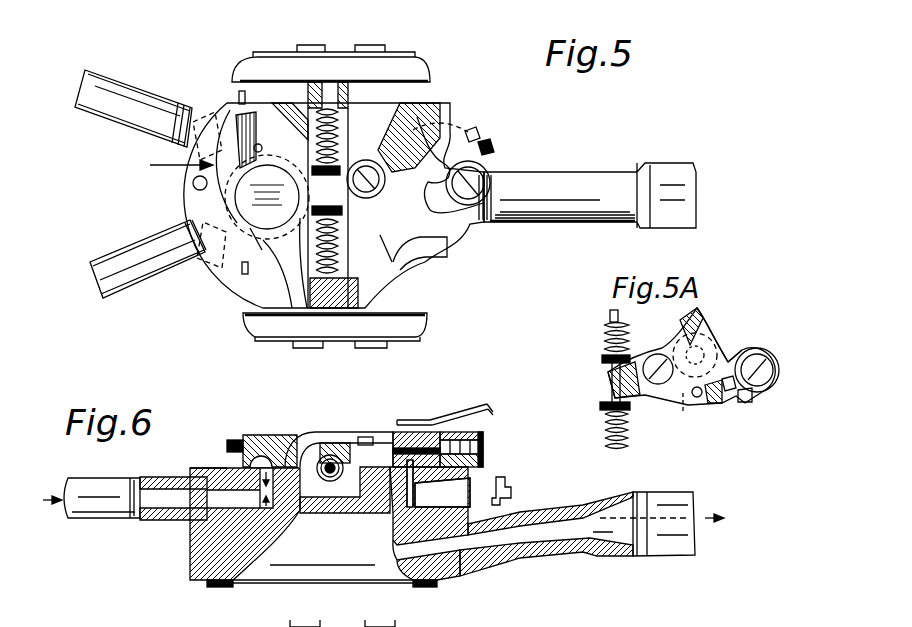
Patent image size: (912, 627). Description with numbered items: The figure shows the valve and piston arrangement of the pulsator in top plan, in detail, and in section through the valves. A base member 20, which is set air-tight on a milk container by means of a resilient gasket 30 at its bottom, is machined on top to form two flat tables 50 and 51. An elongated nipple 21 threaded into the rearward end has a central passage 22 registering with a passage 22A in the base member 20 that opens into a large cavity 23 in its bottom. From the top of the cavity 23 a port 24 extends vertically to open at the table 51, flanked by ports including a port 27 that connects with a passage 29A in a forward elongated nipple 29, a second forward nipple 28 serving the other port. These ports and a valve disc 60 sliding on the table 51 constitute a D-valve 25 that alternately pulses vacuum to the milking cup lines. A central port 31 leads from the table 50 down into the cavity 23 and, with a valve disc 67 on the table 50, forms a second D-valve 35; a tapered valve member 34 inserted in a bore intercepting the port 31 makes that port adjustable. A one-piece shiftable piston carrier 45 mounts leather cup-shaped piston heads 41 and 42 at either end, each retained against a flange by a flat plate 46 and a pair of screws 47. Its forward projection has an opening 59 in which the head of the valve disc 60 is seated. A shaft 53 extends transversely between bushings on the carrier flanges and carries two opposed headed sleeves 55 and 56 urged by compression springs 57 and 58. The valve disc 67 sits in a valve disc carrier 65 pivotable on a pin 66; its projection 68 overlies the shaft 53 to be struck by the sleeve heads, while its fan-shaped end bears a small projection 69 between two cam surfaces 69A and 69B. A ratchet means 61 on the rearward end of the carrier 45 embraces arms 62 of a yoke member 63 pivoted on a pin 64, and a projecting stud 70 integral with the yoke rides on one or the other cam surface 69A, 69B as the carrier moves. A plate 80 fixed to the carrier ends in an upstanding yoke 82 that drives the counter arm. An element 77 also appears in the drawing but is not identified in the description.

In FIG. 5, the base member 20 is at (188, 215).
In FIG. 6, the base member 20 is at (190, 545).
In FIG. 5, the elongated nipple 21 is at (670, 178).
In FIG. 6, the elongated nipple 21 is at (668, 545).
In FIG. 6, the central passage 22 is at (546, 553).
In FIG. 6, the passage 22A is at (443, 560).
In FIG. 6, the cavity 23 is at (240, 578).
In FIG. 6, the port 24 is at (272, 515).
In FIG. 5, the D-valve 25 is at (169, 164).
In FIG. 5, the port 27 is at (258, 145).
In FIG. 6, the port 27 is at (228, 505).
In FIG. 5, the elongated nipple 28 is at (96, 270).
In FIG. 5, the elongated nipple 29 is at (97, 75).
In FIG. 6, the elongated nipple 29 is at (85, 502).
In FIG. 6, the passage 29A is at (138, 505).
In FIG. 6, the resilient gasket 30 is at (213, 583).
In FIG. 6, the central port 31 is at (393, 530).
In FIG. 5, the tapered valve member 34 is at (490, 142).
In FIG. 6, the tapered valve member 34 is at (511, 498).
In FIG. 6, the D-valve 35 is at (425, 490).
In FIG. 5, the piston head 41 is at (432, 326).
In FIG. 5, the piston head 42 is at (422, 63).
In FIG. 5, the piston carrier 45 is at (285, 272).
In FIG. 6, the piston carrier 45 is at (308, 432).
In FIG. 5, the flat plate 46 is at (263, 53).
In FIG. 5, the screws 47 is at (312, 46).
In FIG. 6, the screws 47 is at (305, 626).
In FIG. 5, the table 50 is at (420, 262).
In FIG. 5, the table 51 is at (215, 257).
In FIG. 6, the table 51 is at (195, 461).
In FIG. 5A, the shaft 53 is at (612, 395).
In FIG. 6, the shaft 53 is at (330, 482).
In FIG. 5, the headed sleeve 55 is at (341, 213).
In FIG. 5A, the headed sleeve 55 is at (602, 407).
In FIG. 5, the headed sleeve 56 is at (328, 166).
In FIG. 5A, the headed sleeve 56 is at (602, 352).
In FIG. 5, the compression spring 57 is at (337, 252).
In FIG. 5A, the compression spring 57 is at (627, 432).
In FIG. 5, the compression spring 58 is at (338, 128).
In FIG. 5A, the compression spring 58 is at (603, 330).
In FIG. 6, the opening 59 is at (245, 437).
In FIG. 5, the valve disc 60 is at (240, 195).
In FIG. 6, the valve disc 60 is at (243, 455).
In FIG. 5, the ratchet means 61 is at (440, 255).
In FIG. 6, the ratchet means 61 is at (388, 435).
In FIG. 5, the arms 62 is at (478, 220).
In FIG. 5A, the arms 62 is at (750, 410).
In FIG. 6, the arms 62 is at (432, 437).
In FIG. 5, the yoke member 63 is at (486, 166).
In FIG. 5A, the yoke member 63 is at (776, 381).
In FIG. 6, the yoke member 63 is at (480, 437).
In FIG. 5, the pin 64 is at (484, 192).
In FIG. 5A, the pin 64 is at (764, 388).
In FIG. 6, the pin 64 is at (483, 447).
In FIG. 5, the valve disc carrier 65 is at (413, 103).
In FIG. 5A, the valve disc carrier 65 is at (704, 312).
In FIG. 6, the valve disc carrier 65 is at (480, 460).
In FIG. 5A, the pin 66 is at (659, 385).
In FIG. 6, the pin 66 is at (370, 437).
In FIG. 5, the valve disc 67 is at (466, 130).
In FIG. 5A, the valve disc 67 is at (690, 405).
In FIG. 6, the valve disc 67 is at (390, 480).
In FIG. 5, the projection 68 is at (362, 170).
In FIG. 5A, the small projection 69 is at (715, 350).
In FIG. 5, the cam surface 69A is at (440, 132).
In FIG. 5A, the cam surface 69A is at (724, 340).
In FIG. 5A, the cam surface 69B is at (745, 352).
In FIG. 5A, the projecting stud 70 is at (730, 400).
In FIG. 5, the pin 77 is at (238, 94).
In FIG. 6, the plate 80 is at (430, 420).
In FIG. 6, the upstanding yoke 82 is at (488, 405).